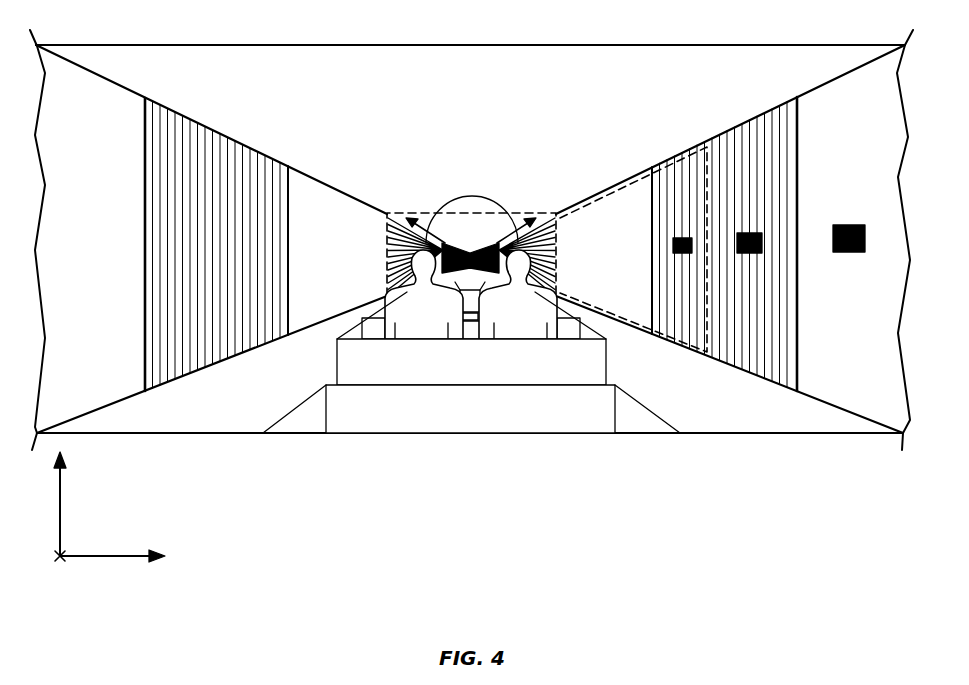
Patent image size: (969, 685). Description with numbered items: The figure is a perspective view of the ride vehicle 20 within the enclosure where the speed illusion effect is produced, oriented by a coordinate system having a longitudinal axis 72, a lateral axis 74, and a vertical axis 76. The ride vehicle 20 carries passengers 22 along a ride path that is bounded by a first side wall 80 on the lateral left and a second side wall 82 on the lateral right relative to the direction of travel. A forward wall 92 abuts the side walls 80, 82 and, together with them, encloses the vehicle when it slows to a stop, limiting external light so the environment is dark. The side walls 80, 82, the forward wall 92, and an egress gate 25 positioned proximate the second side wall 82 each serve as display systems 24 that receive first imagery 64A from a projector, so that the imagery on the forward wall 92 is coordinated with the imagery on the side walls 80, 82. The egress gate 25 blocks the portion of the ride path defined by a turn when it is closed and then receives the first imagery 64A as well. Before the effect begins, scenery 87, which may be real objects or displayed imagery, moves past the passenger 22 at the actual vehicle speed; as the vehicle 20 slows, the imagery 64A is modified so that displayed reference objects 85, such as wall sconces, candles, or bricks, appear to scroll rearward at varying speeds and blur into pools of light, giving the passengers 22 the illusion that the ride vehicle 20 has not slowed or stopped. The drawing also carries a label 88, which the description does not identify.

The ride vehicle 20 is at (472, 385).
The passengers 22 is at (508, 250).
The display system 24 is at (103, 408).
The egress gate 25 is at (608, 190).
The first imagery 64A is at (178, 113).
The longitudinal axis 72 is at (62, 552).
The lateral axis 74 is at (132, 558).
The vertical axis 76 is at (59, 508).
The first side wall 80 is at (107, 80).
The second side wall 82 is at (832, 80).
The displayed reference objects 85 is at (747, 233).
The scenery 87 is at (850, 225).
The field of view 88 is at (471, 213).
The forward wall 92 is at (405, 214).